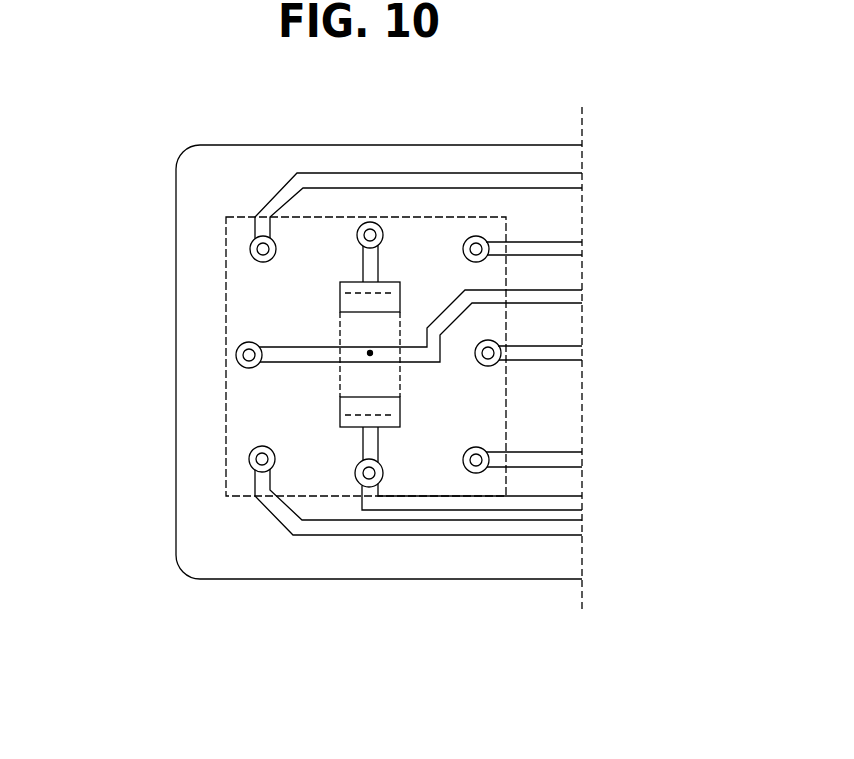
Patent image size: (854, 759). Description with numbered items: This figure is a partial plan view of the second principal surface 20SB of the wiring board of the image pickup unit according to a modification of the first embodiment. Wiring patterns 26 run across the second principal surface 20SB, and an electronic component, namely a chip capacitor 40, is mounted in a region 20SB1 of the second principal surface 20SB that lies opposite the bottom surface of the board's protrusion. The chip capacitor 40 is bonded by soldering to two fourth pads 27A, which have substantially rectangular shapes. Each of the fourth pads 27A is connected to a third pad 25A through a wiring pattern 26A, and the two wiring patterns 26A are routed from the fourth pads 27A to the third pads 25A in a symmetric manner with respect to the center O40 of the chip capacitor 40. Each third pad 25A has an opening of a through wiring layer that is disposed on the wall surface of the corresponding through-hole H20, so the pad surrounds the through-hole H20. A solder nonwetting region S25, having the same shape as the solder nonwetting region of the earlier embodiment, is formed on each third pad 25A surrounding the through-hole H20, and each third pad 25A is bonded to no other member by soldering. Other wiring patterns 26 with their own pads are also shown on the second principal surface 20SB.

The second principal surface 20SB is at (558, 221).
The region 20SB1 is at (507, 332).
The wiring patterns 26 is at (550, 172).
The third pads 25A is at (355, 240).
The solder nonwetting region S25 is at (357, 233).
The wiring patterns 26A is at (360, 262).
The fourth pads 27A is at (340, 300).
The chip capacitor 40 is at (400, 385).
The center of the chip capacitor O40 is at (370, 351).
The through-hole H20 is at (262, 452).